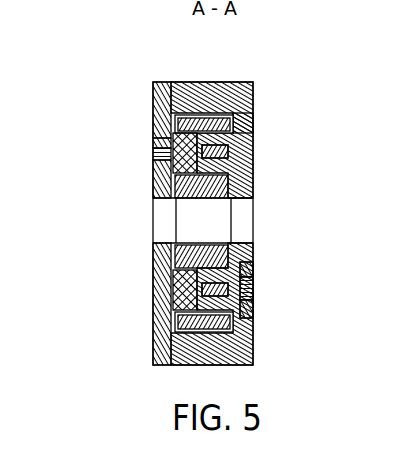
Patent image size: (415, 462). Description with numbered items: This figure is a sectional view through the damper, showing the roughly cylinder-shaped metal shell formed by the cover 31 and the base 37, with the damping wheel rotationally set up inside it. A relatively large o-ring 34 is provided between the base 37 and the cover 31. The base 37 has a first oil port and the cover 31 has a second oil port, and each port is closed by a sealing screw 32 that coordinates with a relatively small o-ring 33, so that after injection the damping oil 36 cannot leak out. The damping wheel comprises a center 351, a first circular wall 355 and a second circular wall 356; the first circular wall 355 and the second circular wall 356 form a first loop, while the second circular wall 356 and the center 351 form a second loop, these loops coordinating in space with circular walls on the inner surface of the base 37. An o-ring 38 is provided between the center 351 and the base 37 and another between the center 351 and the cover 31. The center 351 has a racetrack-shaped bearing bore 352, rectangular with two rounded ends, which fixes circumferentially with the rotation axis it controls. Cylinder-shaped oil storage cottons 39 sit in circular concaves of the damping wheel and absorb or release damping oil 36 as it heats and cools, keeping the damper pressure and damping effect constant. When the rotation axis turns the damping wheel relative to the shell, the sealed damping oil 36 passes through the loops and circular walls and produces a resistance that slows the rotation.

The cover 31 is at (142, 200).
The sealing screw 32 is at (180, 176).
The small o-ring 33 is at (180, 222).
The large o-ring 34 is at (137, 304).
The damping oil 36 is at (126, 307).
The base 37 is at (284, 94).
The o-ring 38 is at (179, 182).
The oil storage cotton 39 is at (213, 124).
The center 351 is at (271, 219).
The bearing bore 352 is at (122, 235).
The first circular wall 355 is at (253, 343).
The second circular wall 356 is at (266, 130).